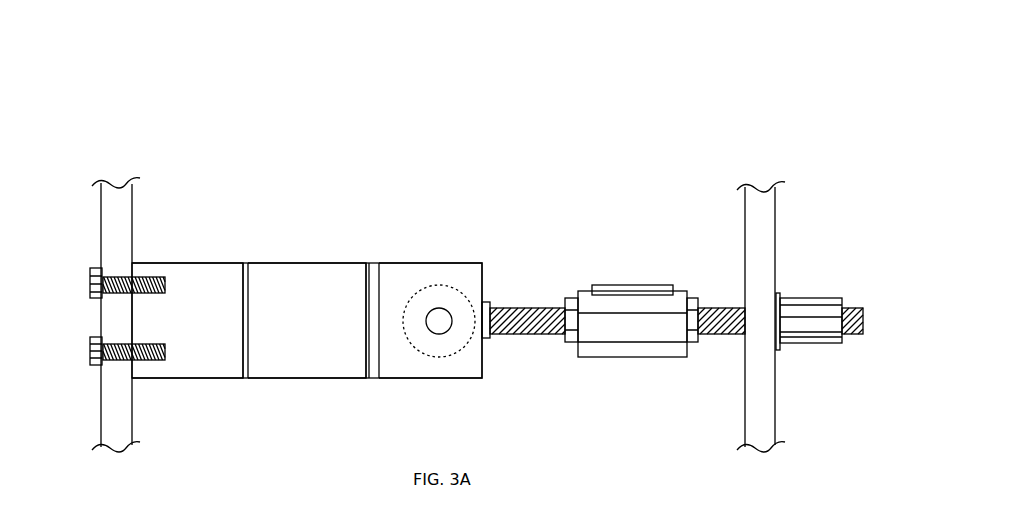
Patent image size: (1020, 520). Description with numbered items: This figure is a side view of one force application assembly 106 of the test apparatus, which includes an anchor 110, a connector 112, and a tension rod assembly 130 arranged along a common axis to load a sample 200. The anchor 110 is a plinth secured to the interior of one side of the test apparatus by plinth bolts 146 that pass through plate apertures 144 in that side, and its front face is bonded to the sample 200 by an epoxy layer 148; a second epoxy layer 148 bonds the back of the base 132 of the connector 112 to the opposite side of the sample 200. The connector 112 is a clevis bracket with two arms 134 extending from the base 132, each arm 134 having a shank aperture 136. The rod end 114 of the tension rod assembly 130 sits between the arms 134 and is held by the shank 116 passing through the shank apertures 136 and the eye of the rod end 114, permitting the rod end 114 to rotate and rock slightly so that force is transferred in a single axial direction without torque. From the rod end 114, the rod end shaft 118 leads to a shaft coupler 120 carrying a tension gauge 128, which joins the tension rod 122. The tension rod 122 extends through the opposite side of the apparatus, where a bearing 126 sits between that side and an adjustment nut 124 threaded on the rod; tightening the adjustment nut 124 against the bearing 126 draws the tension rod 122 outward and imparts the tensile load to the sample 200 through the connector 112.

The force application assembly 106 is at (338, 108).
The anchor 110 is at (212, 331).
The connector 112 is at (411, 394).
The rod end 114 is at (438, 292).
The shank 116 is at (440, 322).
The rod end shaft 118 is at (527, 308).
The shaft coupler 120 is at (630, 333).
The tension rod 122 is at (722, 307).
The adjustment nut 124 is at (810, 313).
The bearing 126 is at (777, 292).
The tension gauge 128 is at (633, 293).
The tension rod assembly 130 is at (572, 161).
The base 132 is at (377, 270).
The arm 134 is at (422, 378).
The shank aperture 136 is at (440, 322).
The plate aperture 144 is at (118, 270).
The plinth bolt 146 is at (90, 272).
The epoxy layer 148 is at (247, 264).
The sample 200 is at (323, 336).